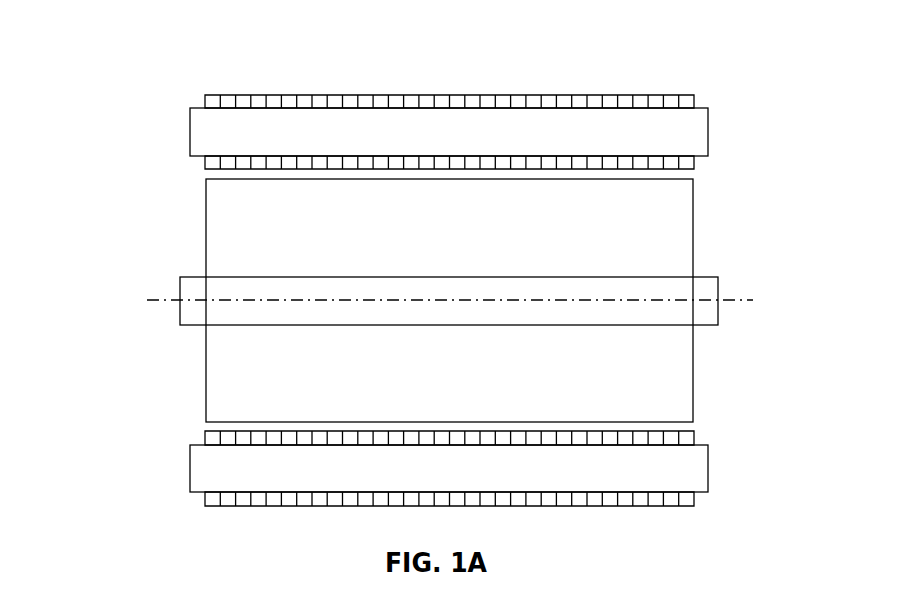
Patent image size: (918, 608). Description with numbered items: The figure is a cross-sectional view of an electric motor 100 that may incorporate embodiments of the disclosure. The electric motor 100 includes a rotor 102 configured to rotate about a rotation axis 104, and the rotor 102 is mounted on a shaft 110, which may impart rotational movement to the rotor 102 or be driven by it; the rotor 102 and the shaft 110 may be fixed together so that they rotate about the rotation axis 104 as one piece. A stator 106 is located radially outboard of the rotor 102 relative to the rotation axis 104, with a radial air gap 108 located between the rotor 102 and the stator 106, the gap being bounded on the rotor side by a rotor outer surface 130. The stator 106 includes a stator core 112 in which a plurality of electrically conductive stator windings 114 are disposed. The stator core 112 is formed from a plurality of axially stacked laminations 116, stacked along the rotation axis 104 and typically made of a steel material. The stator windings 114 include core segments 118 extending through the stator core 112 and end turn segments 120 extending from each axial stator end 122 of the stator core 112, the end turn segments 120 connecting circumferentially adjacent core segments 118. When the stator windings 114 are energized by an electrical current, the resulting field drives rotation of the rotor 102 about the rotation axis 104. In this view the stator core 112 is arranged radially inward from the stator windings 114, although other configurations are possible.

The electric motor 100 is at (137, 28).
The stator 106 is at (672, 45).
The end turn segments 120 is at (199, 139).
The axial stator end 122 is at (205, 98).
The laminations 116 is at (388, 99).
The core segments 118 is at (417, 117).
The stator core 112 is at (478, 95).
The stator windings 114 is at (568, 130).
The radial air gap 108 is at (205, 172).
The rotor 102 is at (470, 242).
The rotor outer surface 130 is at (596, 181).
The shaft 110 is at (188, 318).
The rotation axis 104 is at (740, 297).